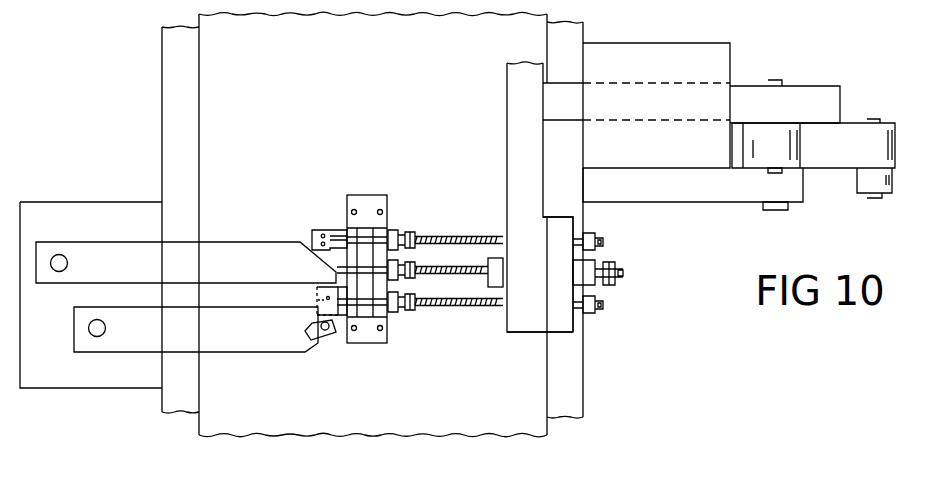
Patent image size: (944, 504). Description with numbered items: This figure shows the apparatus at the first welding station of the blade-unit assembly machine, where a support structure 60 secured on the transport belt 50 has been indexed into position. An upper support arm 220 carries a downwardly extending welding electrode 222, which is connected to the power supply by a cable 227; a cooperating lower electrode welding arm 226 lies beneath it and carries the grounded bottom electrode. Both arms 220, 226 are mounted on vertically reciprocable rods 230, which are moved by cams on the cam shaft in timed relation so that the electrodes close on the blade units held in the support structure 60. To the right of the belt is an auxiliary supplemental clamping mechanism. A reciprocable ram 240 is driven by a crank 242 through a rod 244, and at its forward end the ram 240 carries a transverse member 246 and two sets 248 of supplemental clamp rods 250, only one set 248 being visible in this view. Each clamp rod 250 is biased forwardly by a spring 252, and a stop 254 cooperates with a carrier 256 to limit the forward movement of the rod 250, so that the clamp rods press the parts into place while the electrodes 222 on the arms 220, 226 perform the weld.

The transport belt 50 is at (380, 427).
The support structure 60 is at (344, 221).
The upper support arm 220 is at (260, 345).
The welding electrode 222 is at (316, 299).
The lower electrode welding arm 226 is at (268, 253).
The cable 227 is at (317, 340).
The vertically reciprocable rods 230 is at (61, 255).
The reciprocable ram 240 is at (750, 93).
The crank 242 is at (849, 130).
The rod 244 is at (864, 183).
The transverse member 246 is at (513, 128).
The set of supplemental clamp rods 248 is at (505, 331).
The supplemental clamp rod 250 is at (430, 234).
The spring 252 is at (455, 236).
The stop 254 is at (592, 313).
The carrier 256 is at (568, 323).